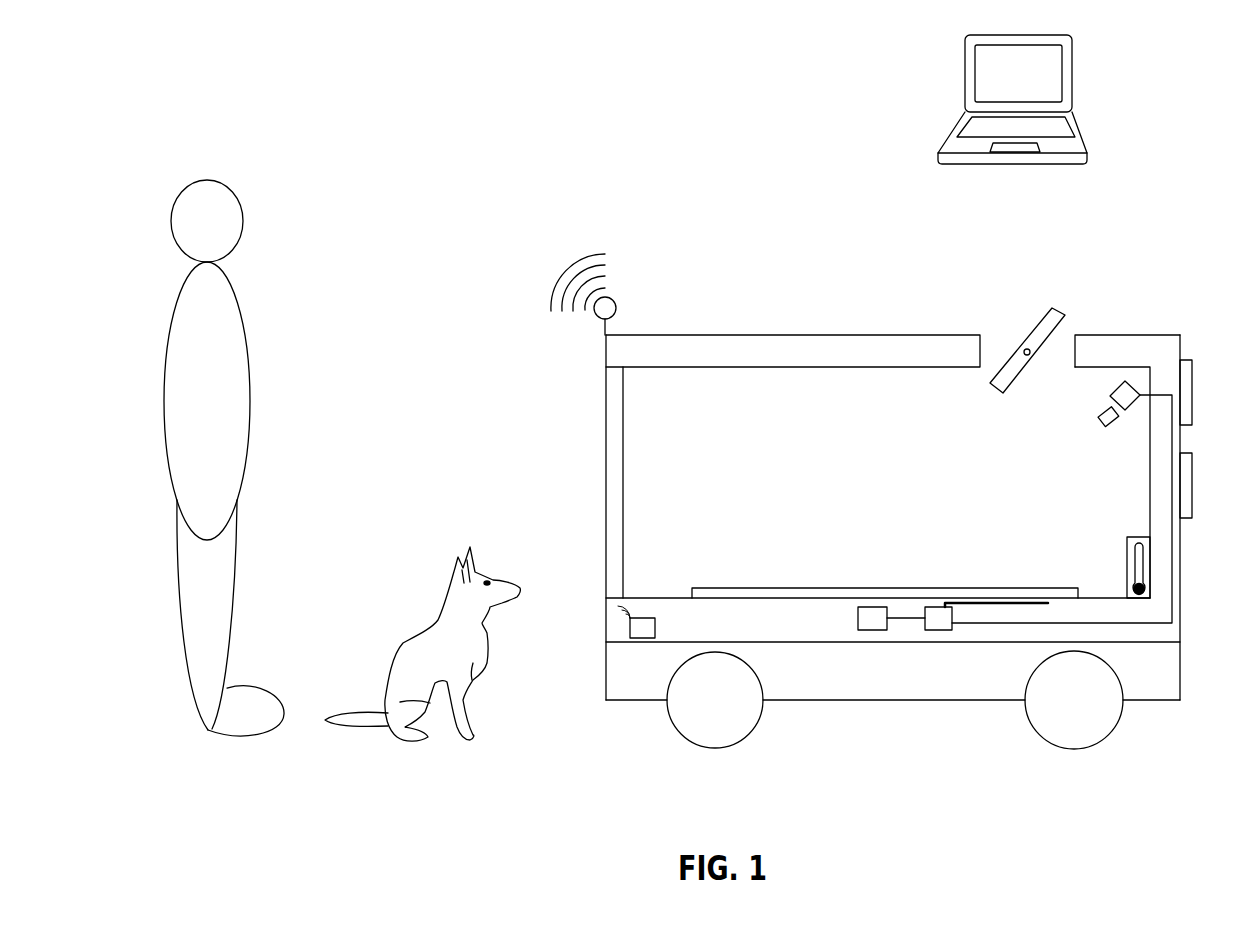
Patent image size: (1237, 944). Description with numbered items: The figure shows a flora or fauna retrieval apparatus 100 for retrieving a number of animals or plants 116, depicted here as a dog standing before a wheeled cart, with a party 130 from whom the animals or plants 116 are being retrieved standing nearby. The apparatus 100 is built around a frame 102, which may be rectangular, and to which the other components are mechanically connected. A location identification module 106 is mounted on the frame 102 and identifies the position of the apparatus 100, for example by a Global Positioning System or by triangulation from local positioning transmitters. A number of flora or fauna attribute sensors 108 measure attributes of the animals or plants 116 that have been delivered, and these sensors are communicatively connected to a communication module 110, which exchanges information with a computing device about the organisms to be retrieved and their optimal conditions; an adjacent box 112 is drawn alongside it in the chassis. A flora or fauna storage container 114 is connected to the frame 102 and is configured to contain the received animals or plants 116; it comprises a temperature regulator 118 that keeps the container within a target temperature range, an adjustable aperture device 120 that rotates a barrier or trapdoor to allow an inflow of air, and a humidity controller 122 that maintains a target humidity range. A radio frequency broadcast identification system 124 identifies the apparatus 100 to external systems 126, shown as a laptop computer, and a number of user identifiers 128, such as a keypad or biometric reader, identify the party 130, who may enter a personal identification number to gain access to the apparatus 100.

The flora or fauna retrieval apparatus 100 is at (572, 190).
The frame 102 is at (797, 623).
The location identification module 106 is at (642, 628).
The flora or fauna attribute sensors 108 is at (1110, 403).
The communication module 110 is at (938, 623).
The power source 112 is at (868, 618).
The flora or fauna storage container 114 is at (665, 428).
The animals or plants 116 is at (432, 650).
The temperature regulator 118 is at (1127, 545).
The adjustable aperture device 120 is at (995, 348).
The humidity controller 122 is at (1192, 482).
The radio frequency broadcast identification system 124 is at (612, 307).
The external systems 126 is at (985, 78).
The user identifiers 128 is at (1186, 360).
The party 130 is at (233, 401).